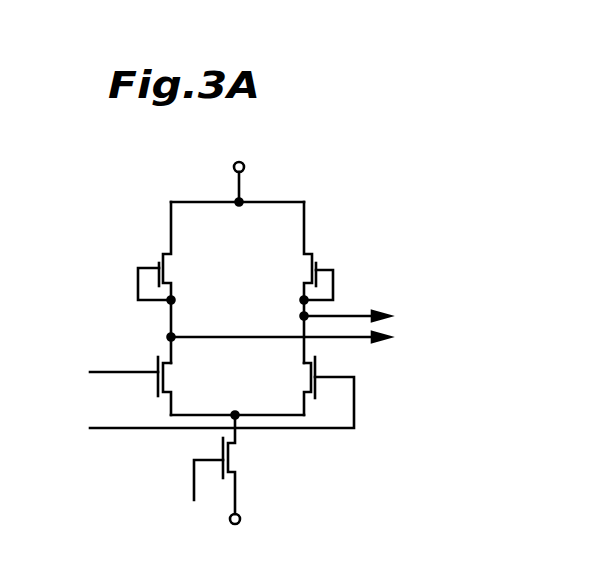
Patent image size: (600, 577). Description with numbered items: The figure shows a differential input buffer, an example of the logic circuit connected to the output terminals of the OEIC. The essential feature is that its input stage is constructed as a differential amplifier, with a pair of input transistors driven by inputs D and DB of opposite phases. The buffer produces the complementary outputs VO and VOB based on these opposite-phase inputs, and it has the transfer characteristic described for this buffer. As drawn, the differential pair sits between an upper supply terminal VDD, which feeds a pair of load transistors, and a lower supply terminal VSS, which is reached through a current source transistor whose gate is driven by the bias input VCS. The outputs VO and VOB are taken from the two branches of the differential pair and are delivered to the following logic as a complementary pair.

The positive supply terminal VDD is at (266, 178).
The negative supply terminal VSS is at (258, 522).
The current source bias input VCS is at (189, 499).
The input D is at (222, 402).
The input DB is at (112, 338).
The output VO is at (295, 343).
The output VOB is at (413, 293).